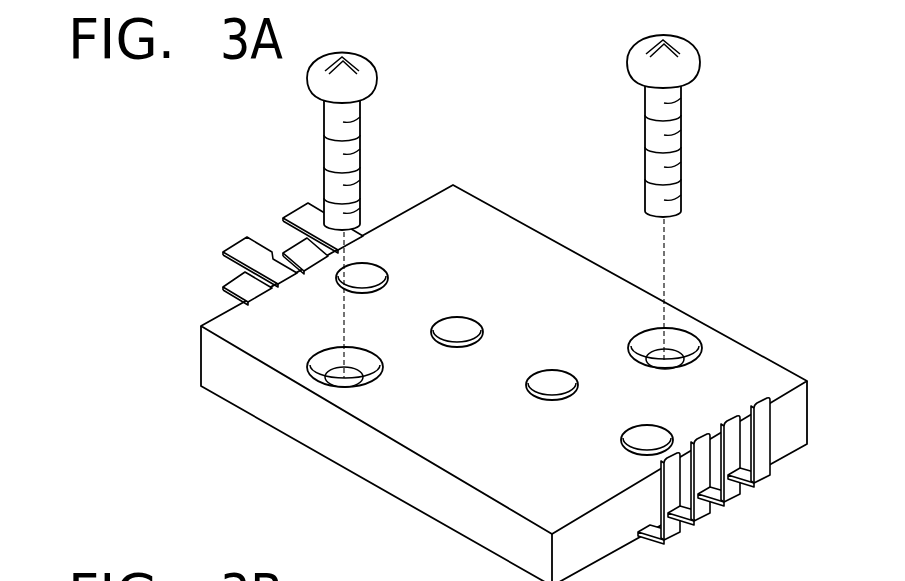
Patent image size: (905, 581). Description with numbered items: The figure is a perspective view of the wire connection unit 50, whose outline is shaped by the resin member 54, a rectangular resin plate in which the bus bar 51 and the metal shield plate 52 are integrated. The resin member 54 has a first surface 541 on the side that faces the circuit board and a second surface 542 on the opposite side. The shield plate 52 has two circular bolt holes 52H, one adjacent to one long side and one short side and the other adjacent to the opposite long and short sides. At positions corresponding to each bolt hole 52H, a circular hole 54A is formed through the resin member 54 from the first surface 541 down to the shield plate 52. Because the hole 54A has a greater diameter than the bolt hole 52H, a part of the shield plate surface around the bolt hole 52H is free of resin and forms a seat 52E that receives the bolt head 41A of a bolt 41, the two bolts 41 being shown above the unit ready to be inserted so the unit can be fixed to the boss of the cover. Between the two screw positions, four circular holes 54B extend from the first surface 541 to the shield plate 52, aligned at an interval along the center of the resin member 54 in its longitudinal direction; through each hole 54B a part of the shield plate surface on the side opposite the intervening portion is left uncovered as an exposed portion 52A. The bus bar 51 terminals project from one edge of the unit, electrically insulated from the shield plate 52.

The wire connection unit 50 is at (526, 183).
The resin member 54 is at (453, 186).
The first surface 541 is at (546, 246).
The second surface 542 is at (457, 535).
The hole 54A is at (328, 352).
The circular hole 54B is at (380, 269).
The shield plate 52 is at (702, 344).
The exposed portion 52A is at (378, 294).
The seat 52E is at (311, 368).
The bolt hole 52H is at (350, 387).
The bus bar 51 is at (746, 490).
The bolt 41 is at (362, 152).
The bolt head 41A is at (366, 79).